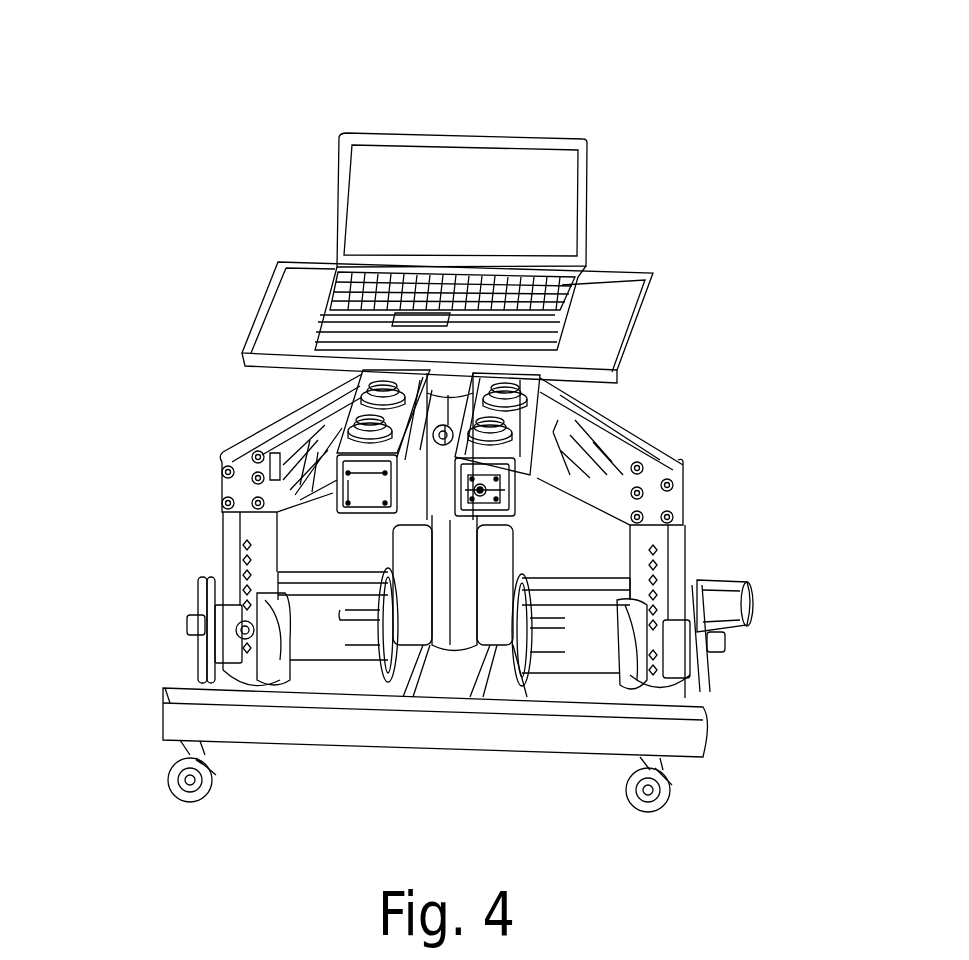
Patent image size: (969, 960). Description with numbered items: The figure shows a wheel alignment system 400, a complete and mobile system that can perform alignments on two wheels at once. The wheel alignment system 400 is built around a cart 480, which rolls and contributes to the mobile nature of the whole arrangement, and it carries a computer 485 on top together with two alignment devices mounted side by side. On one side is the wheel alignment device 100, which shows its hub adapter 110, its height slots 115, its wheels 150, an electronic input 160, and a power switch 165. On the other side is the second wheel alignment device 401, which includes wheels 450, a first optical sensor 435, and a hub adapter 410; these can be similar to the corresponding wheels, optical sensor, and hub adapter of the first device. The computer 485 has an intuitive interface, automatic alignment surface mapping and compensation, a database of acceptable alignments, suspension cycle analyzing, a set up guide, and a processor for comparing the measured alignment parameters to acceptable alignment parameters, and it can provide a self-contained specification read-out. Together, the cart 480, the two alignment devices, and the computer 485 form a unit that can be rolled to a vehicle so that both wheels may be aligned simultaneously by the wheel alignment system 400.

The wheel alignment system 400 is at (638, 79).
The second wheel alignment device 401 is at (208, 392).
The wheel alignment device 100 is at (678, 400).
The computer 485 is at (395, 226).
The wheels 450 is at (363, 420).
The first optical sensor 435 is at (363, 488).
The hub adapter 410 is at (383, 628).
The cart 480 is at (158, 716).
The wheels 150 is at (517, 392).
The electronic input 160 is at (460, 492).
The power switch 165 is at (517, 488).
The hub adapter 110 is at (530, 600).
The height slots 115 is at (653, 592).